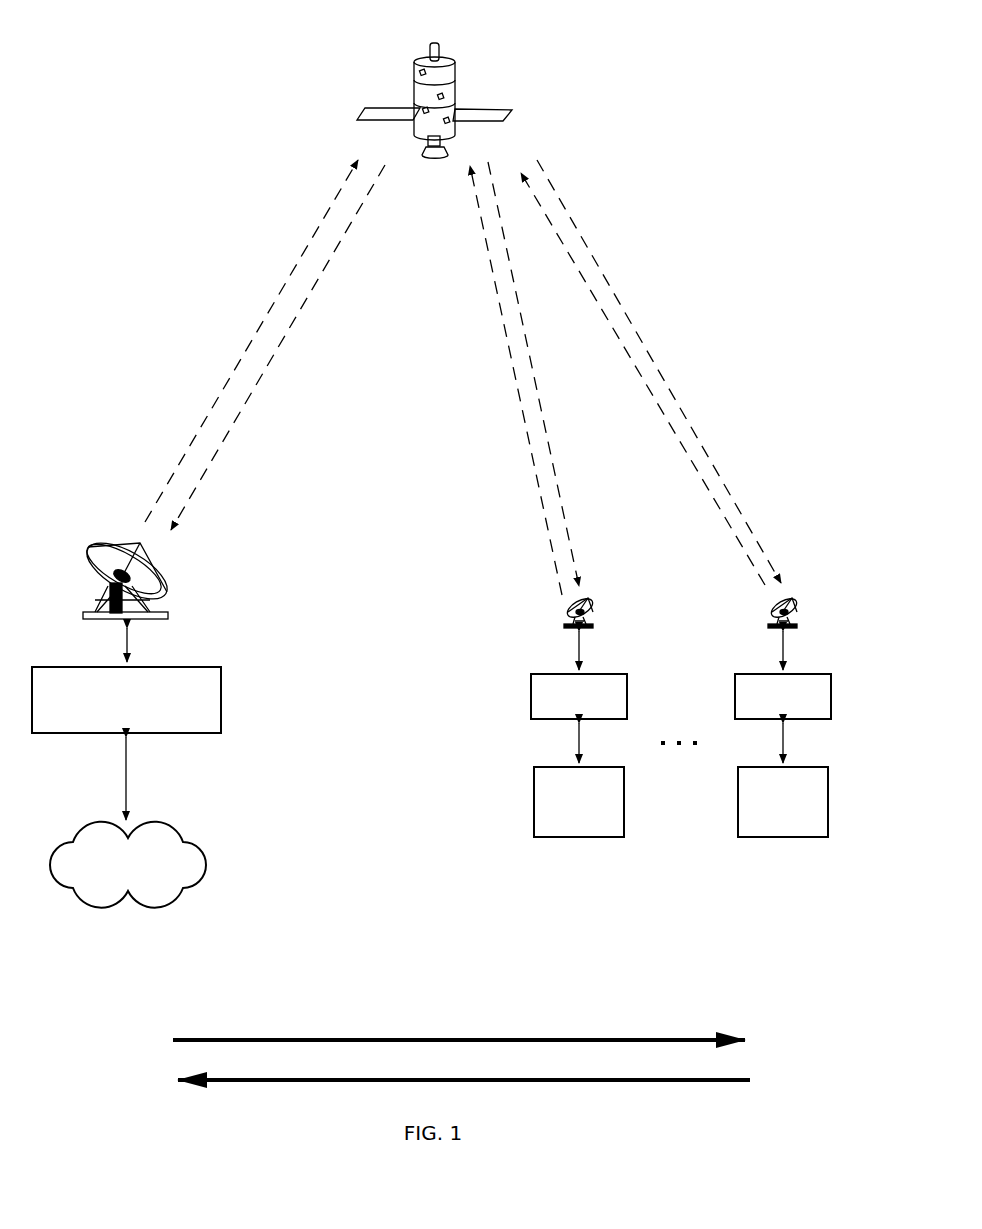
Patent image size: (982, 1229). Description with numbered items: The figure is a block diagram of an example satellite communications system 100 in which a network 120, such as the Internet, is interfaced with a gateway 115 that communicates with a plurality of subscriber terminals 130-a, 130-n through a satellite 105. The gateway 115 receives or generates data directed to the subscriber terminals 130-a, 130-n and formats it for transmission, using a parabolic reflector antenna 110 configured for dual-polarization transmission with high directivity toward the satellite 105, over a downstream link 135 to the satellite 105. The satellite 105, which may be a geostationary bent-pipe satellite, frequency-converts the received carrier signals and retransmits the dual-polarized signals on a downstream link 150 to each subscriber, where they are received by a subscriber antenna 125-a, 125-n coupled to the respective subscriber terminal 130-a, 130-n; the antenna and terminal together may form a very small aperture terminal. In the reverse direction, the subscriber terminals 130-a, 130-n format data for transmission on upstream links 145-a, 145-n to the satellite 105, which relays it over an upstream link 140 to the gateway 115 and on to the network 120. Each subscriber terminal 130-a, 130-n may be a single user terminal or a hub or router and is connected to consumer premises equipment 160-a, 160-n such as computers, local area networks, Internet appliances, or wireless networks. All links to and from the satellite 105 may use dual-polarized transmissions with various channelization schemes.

The satellite communications system 100 is at (730, 962).
The satellite 105 is at (438, 42).
The antenna 110 is at (168, 595).
The gateway 115 is at (221, 700).
The network 120 is at (203, 868).
The subscriber antenna 125-a is at (566, 613).
The subscriber antenna 125-n is at (771, 613).
The subscriber terminal 130-a is at (531, 690).
The subscriber terminal 130-n is at (735, 690).
The downstream link 135 is at (252, 340).
The upstream link 140 is at (320, 275).
The upstream link 145-a is at (519, 390).
The upstream link 145-n is at (647, 385).
The downstream link 150 is at (600, 268).
The consumer premises equipment 160-a is at (563, 838).
The consumer premises equipment 160-n is at (767, 838).